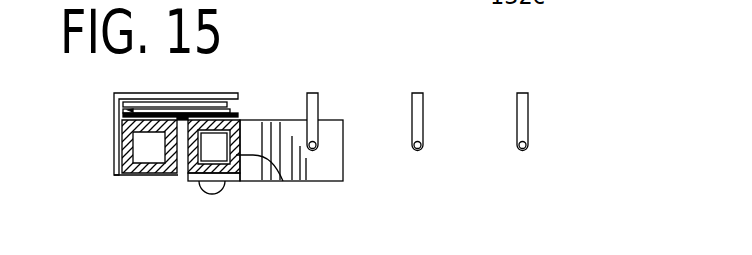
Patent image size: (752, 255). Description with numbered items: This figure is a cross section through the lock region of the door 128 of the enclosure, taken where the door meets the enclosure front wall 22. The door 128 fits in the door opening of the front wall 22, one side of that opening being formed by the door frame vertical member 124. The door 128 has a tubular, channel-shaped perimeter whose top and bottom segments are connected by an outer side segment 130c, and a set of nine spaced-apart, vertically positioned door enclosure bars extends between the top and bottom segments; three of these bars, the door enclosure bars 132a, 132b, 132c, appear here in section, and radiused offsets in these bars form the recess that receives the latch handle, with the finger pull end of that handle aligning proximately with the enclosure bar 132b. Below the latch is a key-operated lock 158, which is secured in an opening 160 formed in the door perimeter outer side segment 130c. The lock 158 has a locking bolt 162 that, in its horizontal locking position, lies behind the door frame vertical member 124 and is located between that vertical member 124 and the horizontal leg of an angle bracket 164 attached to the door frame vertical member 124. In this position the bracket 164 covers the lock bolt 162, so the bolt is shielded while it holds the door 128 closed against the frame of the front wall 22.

The enclosure front wall 22 is at (137, 178).
The door frame vertical member 124 is at (150, 178).
The door 128 is at (332, 176).
The outer side segment 130c is at (283, 182).
The door enclosure bar 132a is at (311, 108).
The door enclosure bar 132b is at (415, 125).
The door enclosure bar 132c is at (522, 121).
The key-operated lock 158 is at (217, 190).
The opening 160 is at (273, 89).
The locking bolt 162 is at (113, 110).
The angle bracket 164 is at (196, 67).